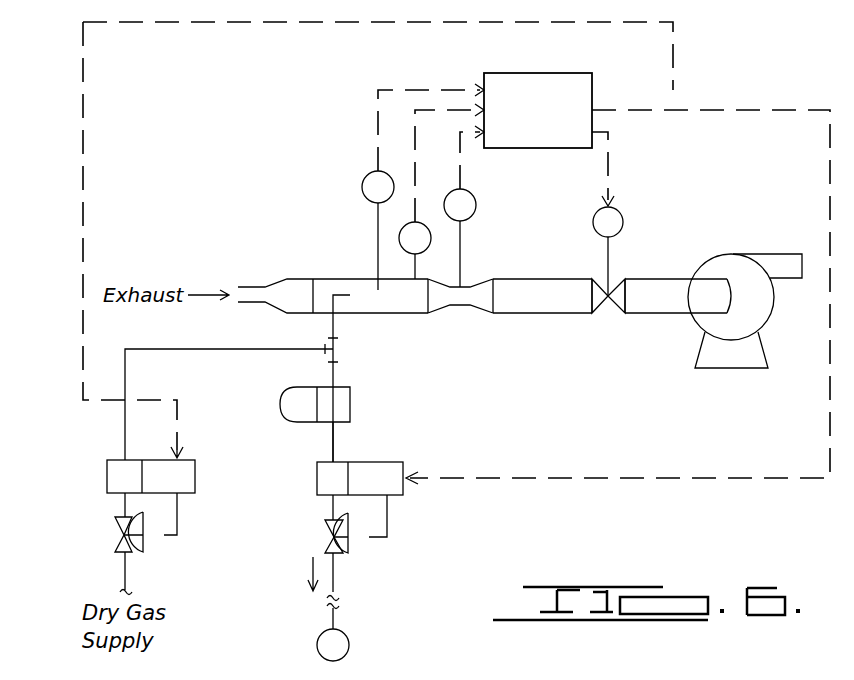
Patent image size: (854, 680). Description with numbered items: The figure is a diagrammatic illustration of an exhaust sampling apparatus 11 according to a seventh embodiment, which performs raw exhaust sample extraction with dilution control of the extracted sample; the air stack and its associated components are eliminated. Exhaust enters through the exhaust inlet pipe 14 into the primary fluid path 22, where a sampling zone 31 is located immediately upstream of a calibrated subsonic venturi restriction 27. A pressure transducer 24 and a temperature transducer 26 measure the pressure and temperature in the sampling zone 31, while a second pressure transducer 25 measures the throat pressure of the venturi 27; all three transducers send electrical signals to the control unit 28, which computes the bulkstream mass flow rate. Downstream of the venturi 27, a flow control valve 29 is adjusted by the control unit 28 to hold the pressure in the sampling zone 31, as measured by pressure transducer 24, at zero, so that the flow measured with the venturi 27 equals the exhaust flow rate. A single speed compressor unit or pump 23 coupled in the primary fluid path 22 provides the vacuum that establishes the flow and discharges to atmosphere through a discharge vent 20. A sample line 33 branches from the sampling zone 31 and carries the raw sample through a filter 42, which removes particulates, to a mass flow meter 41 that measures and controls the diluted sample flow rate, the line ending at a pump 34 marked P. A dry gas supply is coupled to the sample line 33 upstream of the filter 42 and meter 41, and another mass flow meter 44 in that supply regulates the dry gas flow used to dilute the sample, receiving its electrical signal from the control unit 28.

The apparatus 11 is at (718, 197).
The exhaust inlet pipe 14 is at (246, 286).
The discharge vent 20 is at (802, 266).
The primary fluid path 22 is at (335, 278).
The compressor unit or pump 23 is at (712, 369).
The pressure transducer 24 is at (423, 242).
The pressure transducer 25 is at (471, 201).
The temperature transducer 26 is at (367, 176).
The subsonic venturi restriction 27 is at (464, 316).
The control unit 28 is at (501, 79).
The flow control valve 29 is at (614, 320).
The sampling zone 31 is at (397, 313).
The sample line 33 is at (336, 444).
The pressure source 34 is at (317, 641).
The mass flow meter 41 is at (404, 497).
The filter 42 is at (281, 410).
The mass flow meter 44 is at (107, 476).